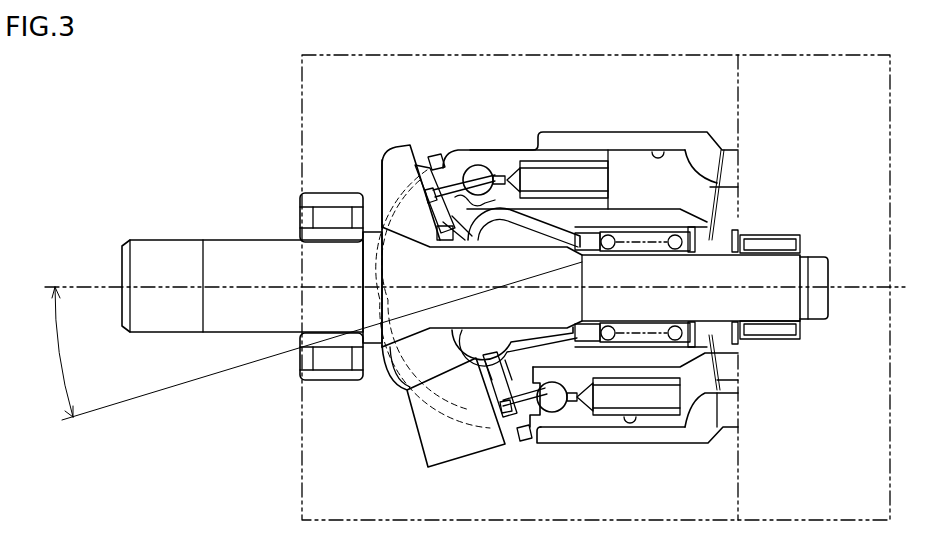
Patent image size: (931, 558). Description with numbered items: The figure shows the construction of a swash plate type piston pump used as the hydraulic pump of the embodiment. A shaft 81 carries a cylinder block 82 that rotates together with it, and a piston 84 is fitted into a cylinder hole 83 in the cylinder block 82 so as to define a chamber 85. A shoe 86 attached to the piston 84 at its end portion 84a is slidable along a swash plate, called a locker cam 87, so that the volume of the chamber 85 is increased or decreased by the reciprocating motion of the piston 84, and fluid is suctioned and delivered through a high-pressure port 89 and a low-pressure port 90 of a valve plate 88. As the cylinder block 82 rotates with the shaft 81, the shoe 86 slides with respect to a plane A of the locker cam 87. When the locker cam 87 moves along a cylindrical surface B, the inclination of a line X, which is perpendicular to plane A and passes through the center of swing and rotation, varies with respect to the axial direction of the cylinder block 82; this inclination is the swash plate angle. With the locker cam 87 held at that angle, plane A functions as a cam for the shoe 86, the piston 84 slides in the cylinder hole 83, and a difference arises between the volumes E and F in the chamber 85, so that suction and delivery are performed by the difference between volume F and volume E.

The shaft 81 is at (245, 252).
The cylinder block 82 is at (553, 437).
The cylinder hole 83 is at (662, 150).
The piston 84 is at (498, 155).
The pivot ball 84a is at (545, 400).
The chamber 85 is at (675, 170).
The shoe 86 is at (428, 162).
The swash plate (locker cam) 87 is at (430, 443).
The valve plate 88 is at (728, 405).
The high-pressure port 89 is at (727, 188).
The low-pressure port 90 is at (730, 380).
The volume F is at (563, 182).
The plane A is at (447, 368).
The cylindrical surface B is at (387, 375).
The line X is at (313, 349).